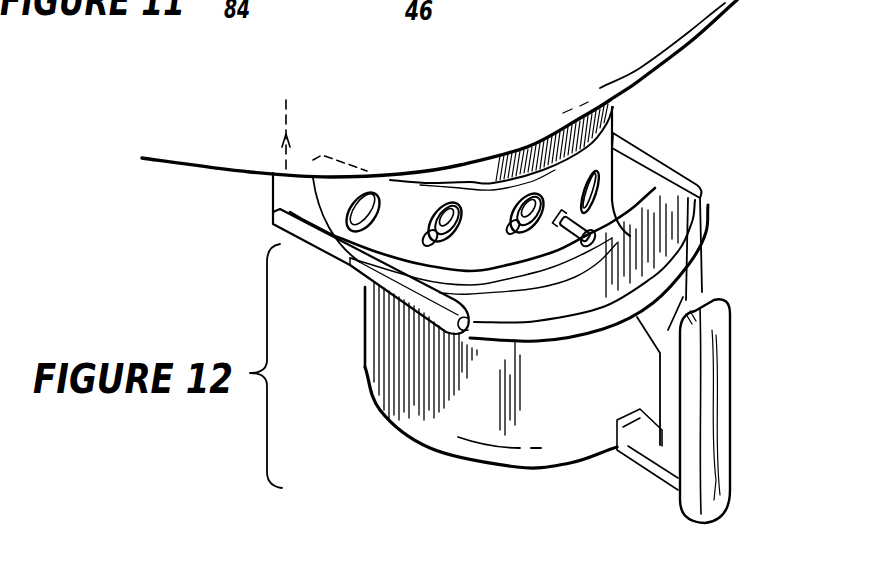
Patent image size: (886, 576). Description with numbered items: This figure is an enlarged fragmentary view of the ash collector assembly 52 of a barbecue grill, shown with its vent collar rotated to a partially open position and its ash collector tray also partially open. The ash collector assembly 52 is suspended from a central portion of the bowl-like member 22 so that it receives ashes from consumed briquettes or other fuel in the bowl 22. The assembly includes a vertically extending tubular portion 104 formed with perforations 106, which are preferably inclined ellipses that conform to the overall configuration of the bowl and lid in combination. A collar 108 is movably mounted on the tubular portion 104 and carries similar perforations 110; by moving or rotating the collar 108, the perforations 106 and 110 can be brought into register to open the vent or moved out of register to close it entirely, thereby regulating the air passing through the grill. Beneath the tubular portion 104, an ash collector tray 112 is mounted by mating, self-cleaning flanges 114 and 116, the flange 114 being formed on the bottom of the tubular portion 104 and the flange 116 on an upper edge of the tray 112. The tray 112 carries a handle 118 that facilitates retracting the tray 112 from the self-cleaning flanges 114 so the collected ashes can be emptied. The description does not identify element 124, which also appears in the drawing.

The bowl-like member 22 is at (665, 85).
The ash collector assembly 52 is at (748, 258).
The vertically extending tubular portion 104 is at (300, 189).
The perforations 106 is at (440, 232).
The collar 108 is at (600, 141).
The perforations 110 is at (511, 221).
The ash collector tray 112 is at (352, 346).
The self-cleaning flange 114 is at (348, 268).
The self-cleaning flange 116 is at (650, 164).
The handle 118 is at (712, 412).
The bolt 124 is at (570, 233).